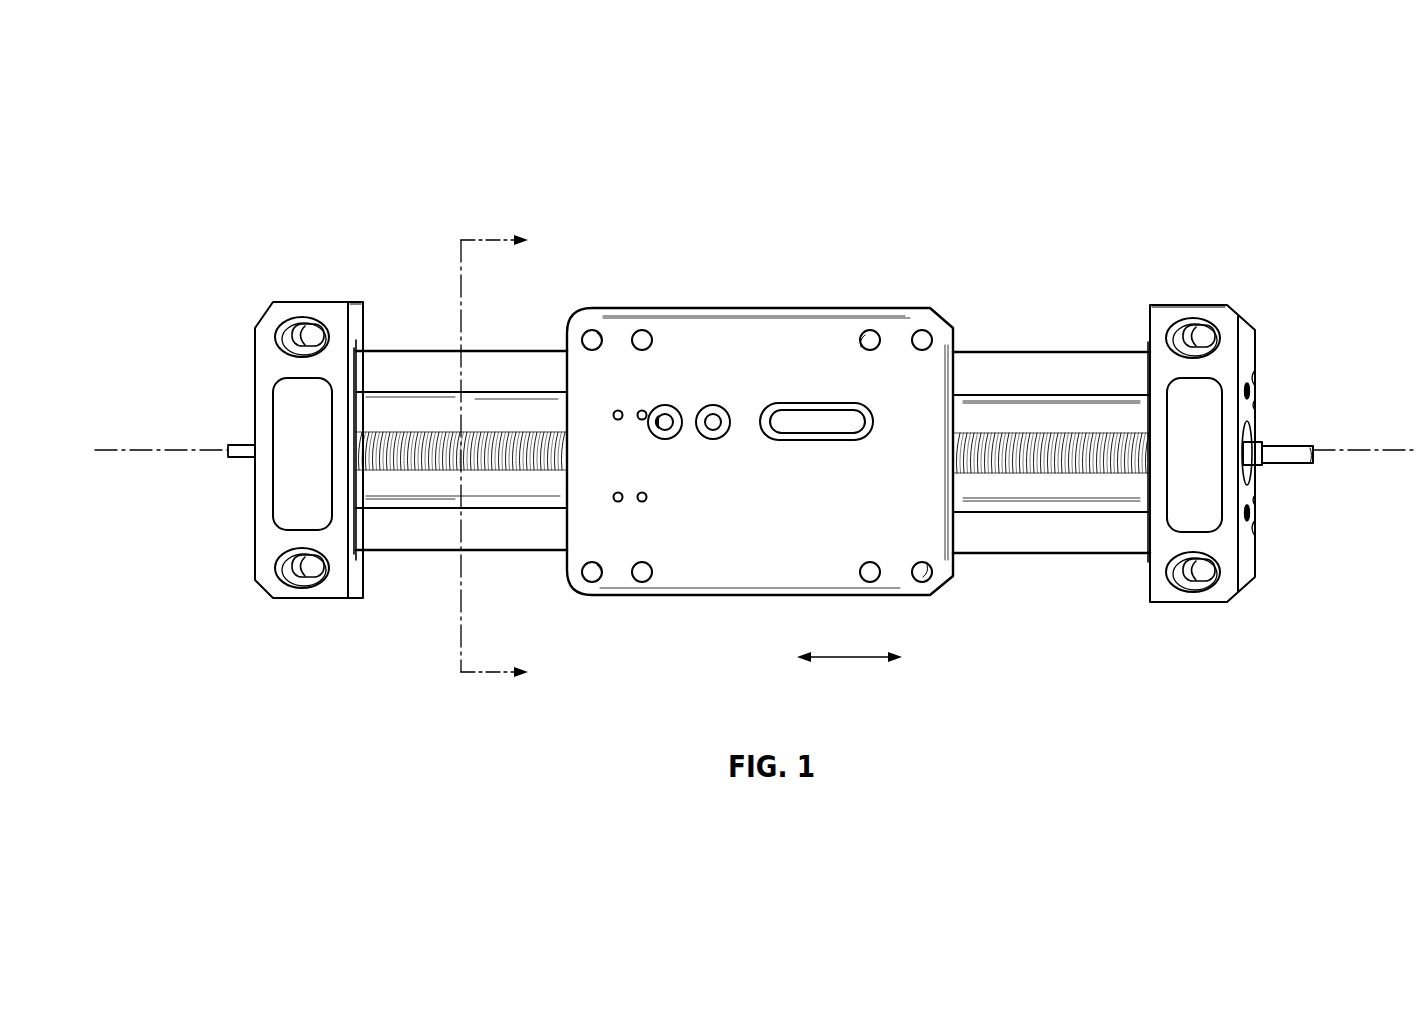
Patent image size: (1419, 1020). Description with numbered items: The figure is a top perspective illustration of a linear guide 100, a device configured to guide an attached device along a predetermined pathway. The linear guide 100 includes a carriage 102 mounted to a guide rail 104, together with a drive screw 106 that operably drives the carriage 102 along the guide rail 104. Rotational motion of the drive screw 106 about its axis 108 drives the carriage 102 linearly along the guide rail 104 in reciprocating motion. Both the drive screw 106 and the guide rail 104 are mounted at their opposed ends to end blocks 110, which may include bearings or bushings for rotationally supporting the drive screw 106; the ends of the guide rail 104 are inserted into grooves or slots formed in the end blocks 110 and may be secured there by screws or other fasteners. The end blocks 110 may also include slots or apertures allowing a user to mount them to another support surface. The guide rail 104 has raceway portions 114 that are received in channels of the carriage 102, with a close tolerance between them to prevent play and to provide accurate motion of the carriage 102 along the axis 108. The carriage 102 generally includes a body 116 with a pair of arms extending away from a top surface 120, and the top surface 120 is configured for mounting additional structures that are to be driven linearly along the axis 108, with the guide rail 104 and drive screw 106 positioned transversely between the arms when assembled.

The linear guide 100 is at (258, 138).
The carriage 102 is at (936, 215).
The guide rail 104 is at (1028, 372).
The drive screw 106 is at (1102, 450).
The axis 108 is at (155, 448).
The end blocks 110 is at (341, 268).
The raceway portions 114 is at (1073, 304).
The body 116 is at (618, 313).
The top surface 120 is at (757, 333).